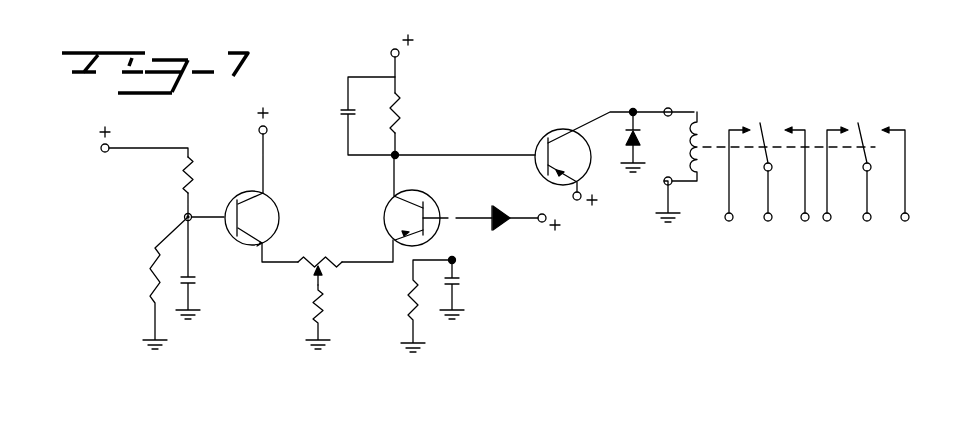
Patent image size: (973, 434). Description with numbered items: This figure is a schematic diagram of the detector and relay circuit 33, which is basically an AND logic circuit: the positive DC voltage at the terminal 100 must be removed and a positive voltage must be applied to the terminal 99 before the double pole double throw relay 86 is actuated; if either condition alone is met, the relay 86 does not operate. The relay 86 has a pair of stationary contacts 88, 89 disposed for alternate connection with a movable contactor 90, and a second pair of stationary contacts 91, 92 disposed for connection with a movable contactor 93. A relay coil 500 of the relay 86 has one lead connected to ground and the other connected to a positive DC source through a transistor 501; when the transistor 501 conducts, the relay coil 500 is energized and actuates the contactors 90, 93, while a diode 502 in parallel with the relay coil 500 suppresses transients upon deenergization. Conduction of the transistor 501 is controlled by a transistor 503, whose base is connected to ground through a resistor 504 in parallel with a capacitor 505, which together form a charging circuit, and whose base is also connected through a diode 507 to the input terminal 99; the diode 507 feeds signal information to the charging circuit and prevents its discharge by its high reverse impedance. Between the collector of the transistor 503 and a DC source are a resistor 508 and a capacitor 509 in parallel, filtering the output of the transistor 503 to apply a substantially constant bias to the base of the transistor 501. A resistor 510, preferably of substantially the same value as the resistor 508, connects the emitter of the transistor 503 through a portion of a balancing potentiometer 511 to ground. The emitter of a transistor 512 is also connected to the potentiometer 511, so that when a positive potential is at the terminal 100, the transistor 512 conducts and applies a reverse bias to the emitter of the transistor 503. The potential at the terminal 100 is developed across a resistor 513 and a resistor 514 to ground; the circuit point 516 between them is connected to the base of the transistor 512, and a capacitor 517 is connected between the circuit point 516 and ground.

The detector and relay circuit 33 is at (523, 70).
The double pole double throw relay 86 is at (835, 107).
The stationary contact 88 is at (738, 130).
The stationary contact 89 is at (802, 130).
The movable contactor 90 is at (773, 118).
The stationary contact 91 is at (837, 130).
The stationary contact 92 is at (898, 130).
The movable contactor 93 is at (860, 130).
The input terminal 99 is at (545, 213).
The terminal 100 is at (106, 152).
The relay coil 500 is at (697, 110).
The transistor 501 is at (588, 177).
The diode 502 is at (643, 143).
The transistor 503 is at (427, 197).
The resistor 504 is at (407, 295).
The capacitor 505 is at (455, 287).
The diode 507 is at (498, 225).
The resistor 508 is at (403, 105).
The capacitor 509 is at (343, 108).
The resistor 510 is at (325, 310).
The potentiometer 511 is at (318, 258).
The transistor 512 is at (275, 207).
The resistor 513 is at (197, 167).
The resistor 514 is at (148, 285).
The circuit point 516 is at (182, 217).
The capacitor 517 is at (193, 287).